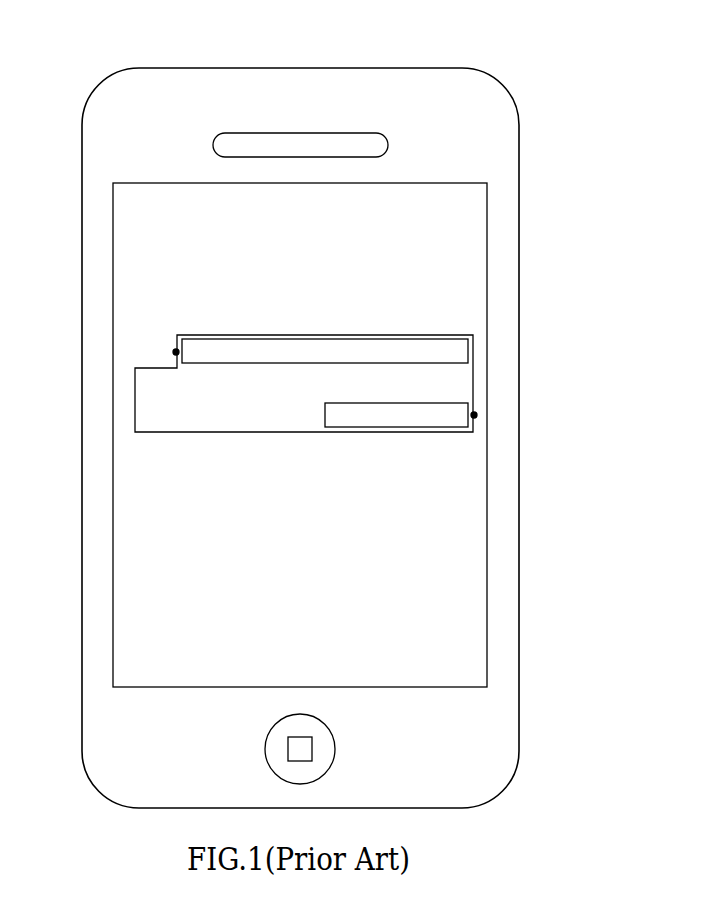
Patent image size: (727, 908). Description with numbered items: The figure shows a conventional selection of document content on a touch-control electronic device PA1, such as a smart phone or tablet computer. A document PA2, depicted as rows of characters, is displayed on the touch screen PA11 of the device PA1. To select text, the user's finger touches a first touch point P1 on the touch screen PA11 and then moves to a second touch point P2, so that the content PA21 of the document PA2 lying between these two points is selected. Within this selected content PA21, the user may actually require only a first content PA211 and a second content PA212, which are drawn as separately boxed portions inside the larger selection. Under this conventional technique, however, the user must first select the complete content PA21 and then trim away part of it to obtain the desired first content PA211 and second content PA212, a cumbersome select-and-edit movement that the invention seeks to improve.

The touch-control electronic device PA1 is at (519, 157).
The touch screen PA11 is at (487, 232).
The document PA2 is at (172, 218).
The content PA21 is at (473, 378).
The first content PA211 is at (468, 350).
The second content PA212 is at (468, 403).
The first touch point P1 is at (176, 352).
The second touch point P2 is at (474, 415).